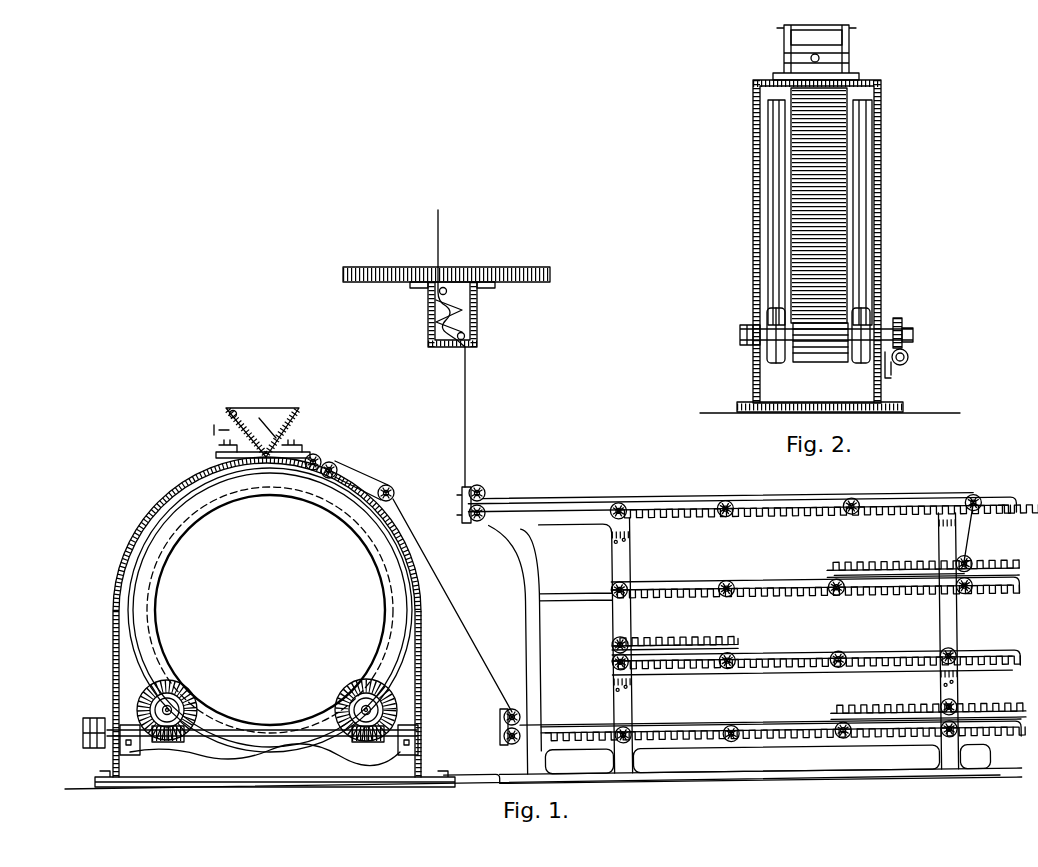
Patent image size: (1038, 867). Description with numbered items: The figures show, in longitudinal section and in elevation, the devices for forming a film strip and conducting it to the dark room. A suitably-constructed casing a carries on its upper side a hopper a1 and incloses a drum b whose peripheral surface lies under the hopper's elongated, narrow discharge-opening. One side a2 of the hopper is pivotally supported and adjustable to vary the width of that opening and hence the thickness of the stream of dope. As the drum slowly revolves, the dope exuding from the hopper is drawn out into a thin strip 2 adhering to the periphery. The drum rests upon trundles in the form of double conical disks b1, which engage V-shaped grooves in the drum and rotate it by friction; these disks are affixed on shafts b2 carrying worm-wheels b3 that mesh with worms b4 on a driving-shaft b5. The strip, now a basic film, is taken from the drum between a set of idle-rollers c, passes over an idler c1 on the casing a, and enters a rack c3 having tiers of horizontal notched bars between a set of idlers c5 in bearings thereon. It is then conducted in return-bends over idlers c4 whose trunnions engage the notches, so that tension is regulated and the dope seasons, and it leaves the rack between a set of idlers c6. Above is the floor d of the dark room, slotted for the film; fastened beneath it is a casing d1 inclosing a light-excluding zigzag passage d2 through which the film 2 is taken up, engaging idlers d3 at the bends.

In FIG. 1, the strip 2 is at (150, 503).
In FIG. 1, the casing a is at (113, 568).
In FIG. 2, the casing a is at (880, 112).
In FIG. 1, the hopper a1 is at (296, 416).
In FIG. 2, the hopper a1 is at (853, 36).
In FIG. 1, the side of the hopper a2 is at (240, 412).
In FIG. 2, the side of the hopper a2 is at (790, 42).
In FIG. 1, the drum b is at (132, 630).
In FIG. 2, the drum b is at (815, 206).
In FIG. 1, the double conical disks b1 is at (136, 700).
In FIG. 2, the double conical disks b1 is at (768, 322).
In FIG. 1, the shafts b2 is at (196, 708).
In FIG. 2, the shafts b2 is at (830, 345).
In FIG. 1, the worm-wheels b3 is at (171, 706).
In FIG. 2, the worm-wheels b3 is at (905, 330).
In FIG. 1, the worms b4 is at (168, 744).
In FIG. 2, the worms b4 is at (908, 364).
In FIG. 1, the driving-shaft b5 is at (312, 738).
In FIG. 2, the driving-shaft b5 is at (880, 360).
In FIG. 1, the idle-rollers c is at (322, 462).
In FIG. 1, the idler c1 is at (394, 490).
In FIG. 1, the rack c3 is at (739, 638).
In FIG. 1, the idlers c4 is at (745, 503).
In FIG. 1, the idlers c5 is at (505, 735).
In FIG. 1, the idlers c6 is at (484, 495).
In FIG. 1, the floor d is at (527, 267).
In FIG. 1, the casing d1 is at (478, 328).
In FIG. 1, the zigzag passage d2 is at (432, 317).
In FIG. 1, the idlers d3 is at (447, 288).